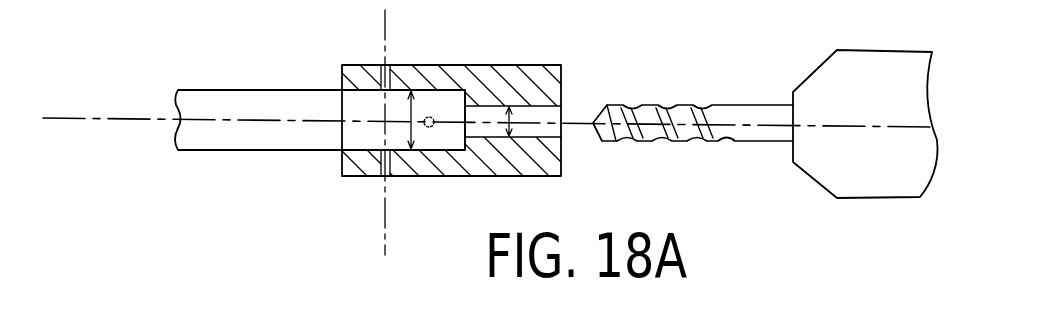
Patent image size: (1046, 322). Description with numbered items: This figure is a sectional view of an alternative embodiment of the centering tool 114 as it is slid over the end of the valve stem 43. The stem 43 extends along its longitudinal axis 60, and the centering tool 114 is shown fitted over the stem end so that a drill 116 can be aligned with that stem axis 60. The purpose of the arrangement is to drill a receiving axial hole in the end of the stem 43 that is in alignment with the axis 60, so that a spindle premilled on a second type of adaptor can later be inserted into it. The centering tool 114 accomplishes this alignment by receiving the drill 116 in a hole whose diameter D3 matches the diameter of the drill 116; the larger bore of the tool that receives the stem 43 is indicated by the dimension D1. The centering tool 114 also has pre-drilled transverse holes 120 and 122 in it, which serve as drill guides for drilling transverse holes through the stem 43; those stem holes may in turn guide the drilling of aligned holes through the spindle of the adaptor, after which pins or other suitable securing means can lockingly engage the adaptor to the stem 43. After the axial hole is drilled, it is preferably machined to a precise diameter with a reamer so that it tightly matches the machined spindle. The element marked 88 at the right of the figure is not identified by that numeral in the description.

The longitudinal axis 60 is at (127, 117).
The stem 43 is at (264, 152).
The centering tool 114 is at (473, 178).
The transverse hole 120 is at (385, 64).
The large bore diameter D1 is at (413, 108).
The diameter D3 is at (510, 118).
The transverse hole 122 is at (433, 128).
The drill 116 is at (747, 104).
The screw head 88 is at (868, 199).